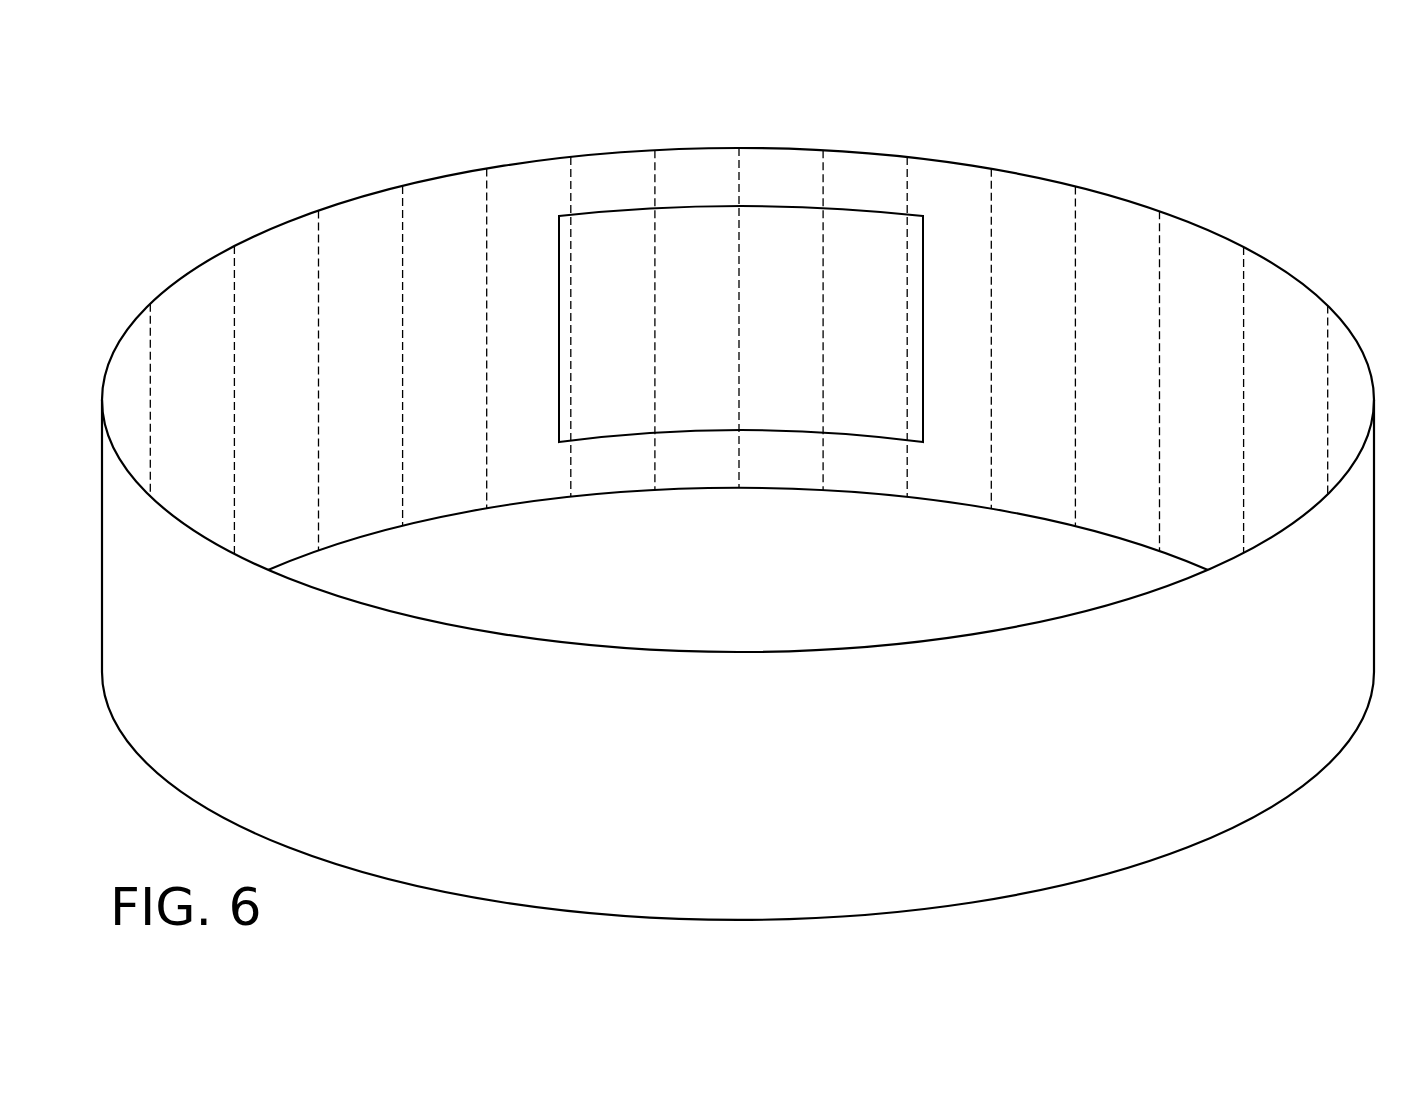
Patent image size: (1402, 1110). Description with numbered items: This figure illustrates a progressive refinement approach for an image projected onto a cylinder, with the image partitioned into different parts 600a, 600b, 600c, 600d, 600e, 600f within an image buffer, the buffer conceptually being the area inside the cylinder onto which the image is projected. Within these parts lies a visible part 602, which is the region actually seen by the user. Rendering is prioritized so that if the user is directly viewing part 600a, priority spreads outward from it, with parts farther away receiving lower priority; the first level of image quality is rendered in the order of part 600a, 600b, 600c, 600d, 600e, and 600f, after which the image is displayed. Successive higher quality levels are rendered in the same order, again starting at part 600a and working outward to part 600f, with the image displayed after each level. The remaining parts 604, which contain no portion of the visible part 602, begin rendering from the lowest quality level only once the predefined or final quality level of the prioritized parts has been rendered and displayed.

The part 600a is at (782, 148).
The part 600b is at (866, 152).
The part 600c is at (697, 148).
The part 600d is at (614, 151).
The part 600e is at (951, 161).
The part 600f is at (530, 160).
The visible part 602 is at (778, 432).
The parts 604 is at (151, 236).